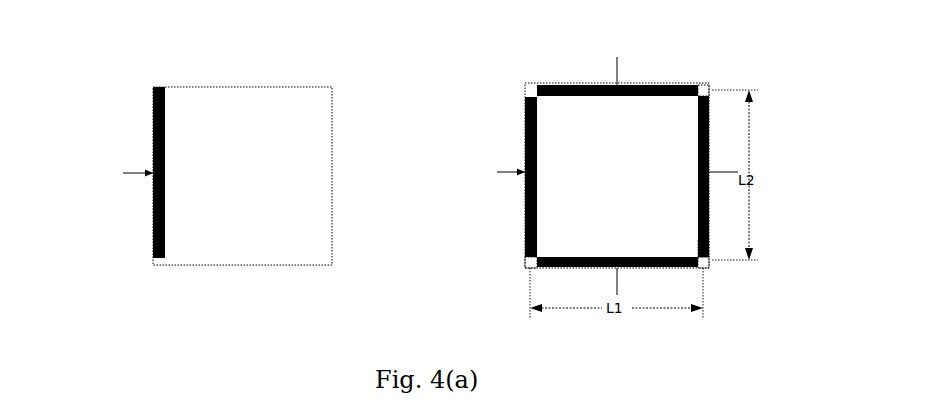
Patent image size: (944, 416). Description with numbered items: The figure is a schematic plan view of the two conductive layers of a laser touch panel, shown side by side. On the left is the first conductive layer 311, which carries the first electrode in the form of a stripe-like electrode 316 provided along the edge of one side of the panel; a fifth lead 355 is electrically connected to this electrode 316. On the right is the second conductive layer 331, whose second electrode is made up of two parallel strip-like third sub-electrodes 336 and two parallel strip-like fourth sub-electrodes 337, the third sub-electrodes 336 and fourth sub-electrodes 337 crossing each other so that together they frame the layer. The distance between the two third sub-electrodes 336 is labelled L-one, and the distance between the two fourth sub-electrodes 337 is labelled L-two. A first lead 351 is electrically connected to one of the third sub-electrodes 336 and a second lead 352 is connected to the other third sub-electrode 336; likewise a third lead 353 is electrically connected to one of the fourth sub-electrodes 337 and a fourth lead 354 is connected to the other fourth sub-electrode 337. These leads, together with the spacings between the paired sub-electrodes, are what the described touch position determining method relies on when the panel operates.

The first conductive layer 311 is at (260, 121).
The electrode 316 is at (153, 223).
The fifth lead 355 is at (136, 173).
The second conductive layer 331 is at (549, 144).
The first lead 351 is at (509, 172).
The second lead 352 is at (726, 172).
The third lead 353 is at (617, 71).
The fourth lead 354 is at (617, 283).
The third sub-electrode 336 is at (525, 257).
The fourth sub-electrode 337 is at (698, 85).